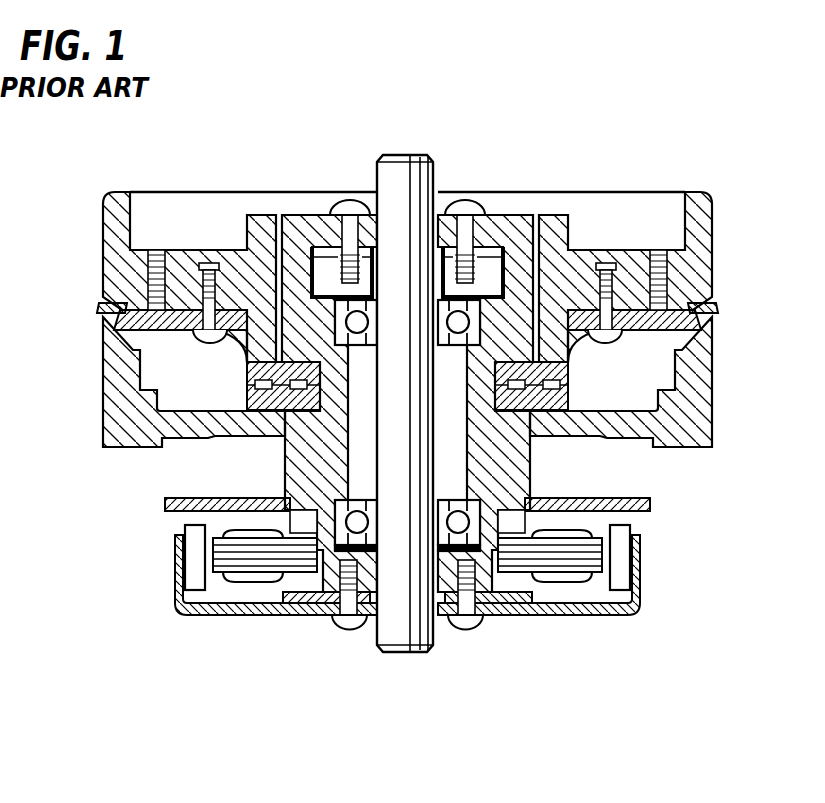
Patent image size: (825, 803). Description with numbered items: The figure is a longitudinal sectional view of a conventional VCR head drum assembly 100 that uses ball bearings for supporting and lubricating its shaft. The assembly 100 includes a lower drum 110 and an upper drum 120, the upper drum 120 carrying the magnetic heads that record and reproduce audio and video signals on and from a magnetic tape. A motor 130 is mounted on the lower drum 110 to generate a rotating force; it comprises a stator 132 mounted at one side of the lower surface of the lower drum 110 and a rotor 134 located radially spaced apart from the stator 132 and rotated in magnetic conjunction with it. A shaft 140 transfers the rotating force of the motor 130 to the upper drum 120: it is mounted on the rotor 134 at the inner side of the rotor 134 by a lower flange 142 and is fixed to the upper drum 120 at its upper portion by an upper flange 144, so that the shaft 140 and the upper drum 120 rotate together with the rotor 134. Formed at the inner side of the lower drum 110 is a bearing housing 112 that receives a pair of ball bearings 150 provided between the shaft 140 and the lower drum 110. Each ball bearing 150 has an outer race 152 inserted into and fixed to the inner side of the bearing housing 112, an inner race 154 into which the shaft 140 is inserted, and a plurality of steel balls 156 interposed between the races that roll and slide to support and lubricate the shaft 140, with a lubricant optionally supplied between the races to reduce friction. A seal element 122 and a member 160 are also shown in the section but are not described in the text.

The head drum assembly 100 is at (666, 99).
The lower drum 110 is at (700, 412).
The bearing housing 112 is at (537, 465).
The upper drum 120 is at (698, 276).
The seal ring 122 is at (700, 309).
The motor 130 is at (484, 570).
The stator 132 is at (600, 562).
The rotor 134 is at (622, 550).
The shaft 140 is at (410, 175).
The lower flange 142 is at (480, 634).
The upper flange 144 is at (491, 235).
The ball bearings 150 is at (374, 537).
The outer race 152 is at (340, 560).
The inner race 154 is at (388, 545).
The balls 156 is at (371, 535).
The rotor magnet / yoke 160 is at (565, 372).